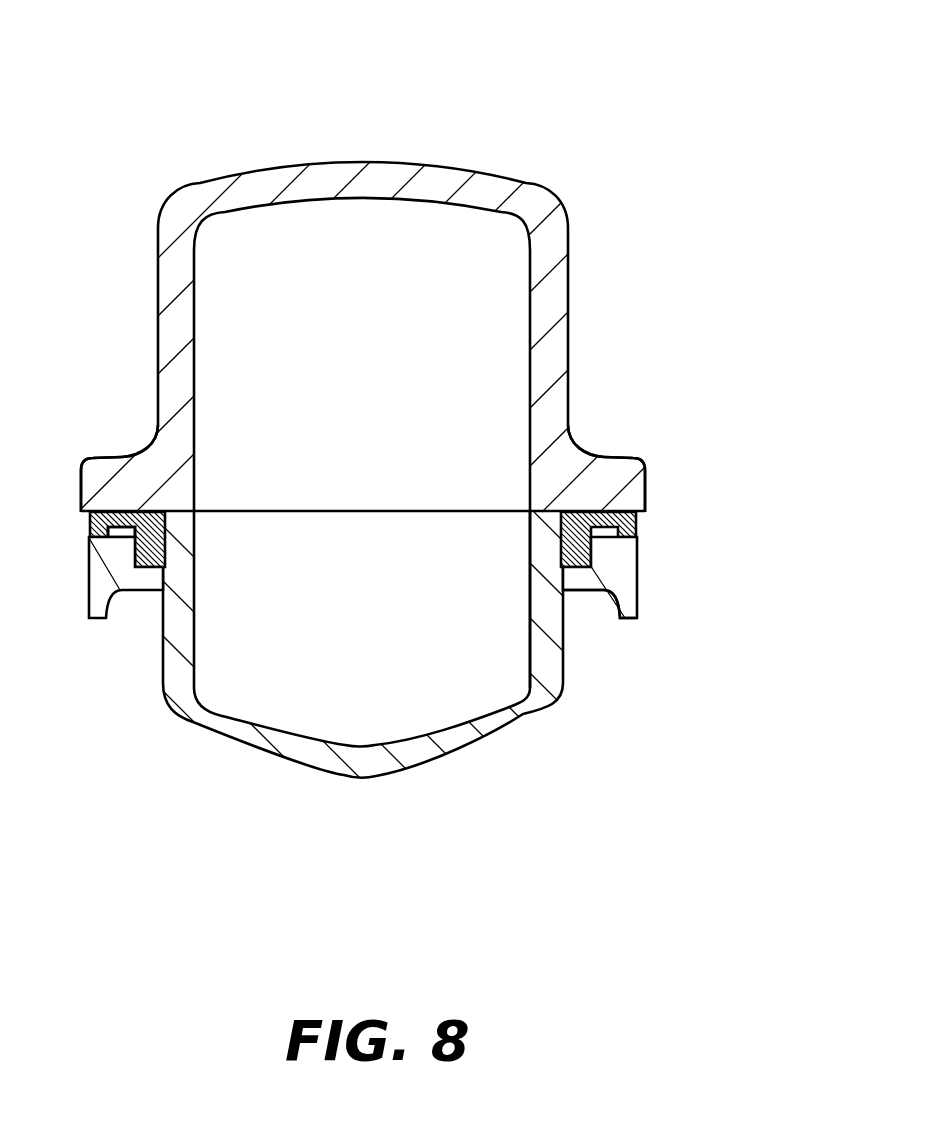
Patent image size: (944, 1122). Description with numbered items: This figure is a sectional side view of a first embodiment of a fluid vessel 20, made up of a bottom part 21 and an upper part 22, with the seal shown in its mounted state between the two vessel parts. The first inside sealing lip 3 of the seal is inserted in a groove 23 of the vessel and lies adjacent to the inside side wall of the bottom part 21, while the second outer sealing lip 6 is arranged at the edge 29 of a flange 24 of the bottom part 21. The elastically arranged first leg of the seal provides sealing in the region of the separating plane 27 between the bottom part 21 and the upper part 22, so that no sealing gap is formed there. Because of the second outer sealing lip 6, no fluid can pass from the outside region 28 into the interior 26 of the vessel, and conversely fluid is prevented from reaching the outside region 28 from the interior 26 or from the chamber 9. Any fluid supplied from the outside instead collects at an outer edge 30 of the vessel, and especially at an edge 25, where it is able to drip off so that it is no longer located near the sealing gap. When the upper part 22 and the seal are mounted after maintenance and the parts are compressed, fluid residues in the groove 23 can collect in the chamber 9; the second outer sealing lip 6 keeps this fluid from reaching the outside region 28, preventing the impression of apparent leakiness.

The vessel 20 is at (573, 95).
The bottom part 21 is at (443, 747).
The upper part 22 is at (555, 250).
The groove 23 is at (540, 563).
The flange 24 is at (617, 583).
The edge 25 is at (666, 527).
The interior of the vessel 26 is at (376, 394).
The separating plane 27 is at (288, 511).
The outside region 28 is at (728, 349).
The edge of the flange 29 is at (637, 562).
The outer edge 30 is at (645, 492).
The first inside sealing lip 3 is at (152, 567).
The second outer sealing lip 6 is at (90, 541).
The chamber 9 is at (130, 535).